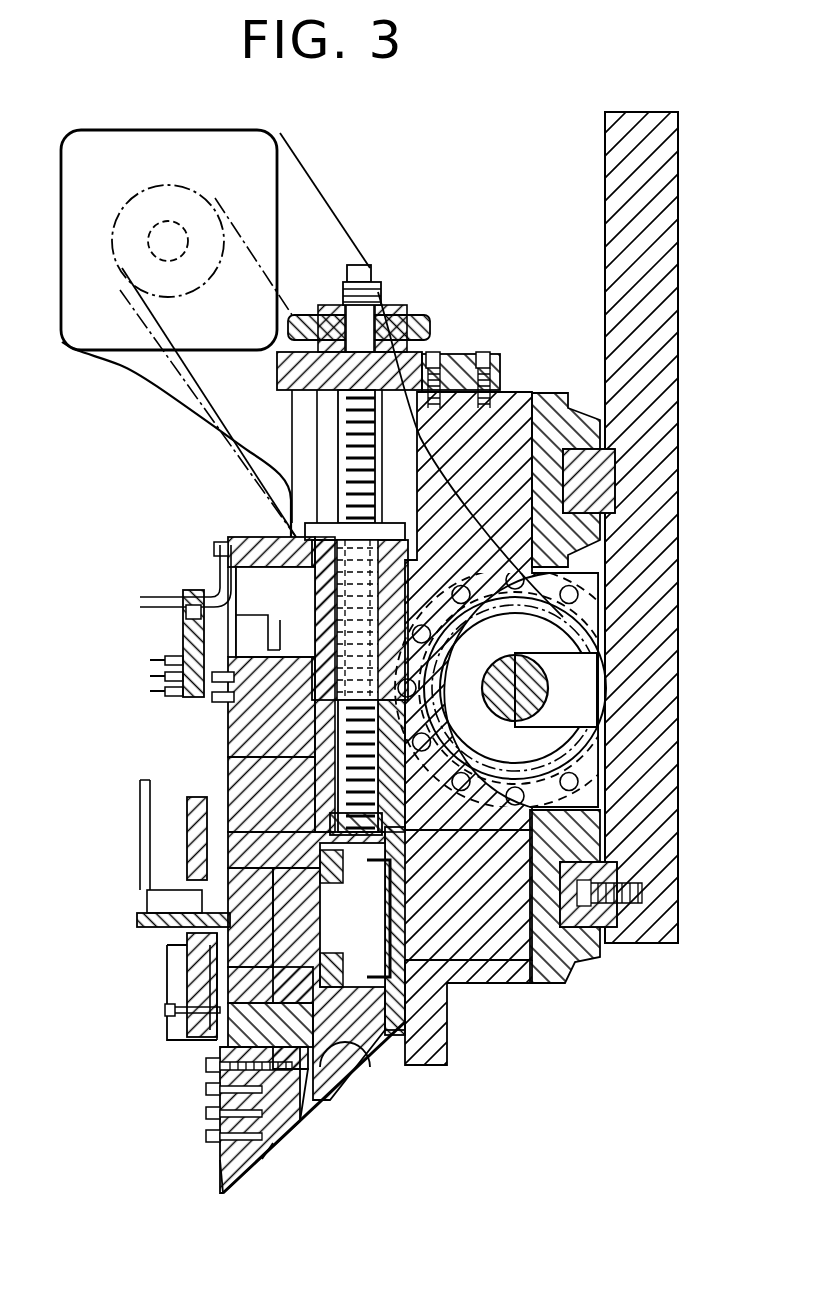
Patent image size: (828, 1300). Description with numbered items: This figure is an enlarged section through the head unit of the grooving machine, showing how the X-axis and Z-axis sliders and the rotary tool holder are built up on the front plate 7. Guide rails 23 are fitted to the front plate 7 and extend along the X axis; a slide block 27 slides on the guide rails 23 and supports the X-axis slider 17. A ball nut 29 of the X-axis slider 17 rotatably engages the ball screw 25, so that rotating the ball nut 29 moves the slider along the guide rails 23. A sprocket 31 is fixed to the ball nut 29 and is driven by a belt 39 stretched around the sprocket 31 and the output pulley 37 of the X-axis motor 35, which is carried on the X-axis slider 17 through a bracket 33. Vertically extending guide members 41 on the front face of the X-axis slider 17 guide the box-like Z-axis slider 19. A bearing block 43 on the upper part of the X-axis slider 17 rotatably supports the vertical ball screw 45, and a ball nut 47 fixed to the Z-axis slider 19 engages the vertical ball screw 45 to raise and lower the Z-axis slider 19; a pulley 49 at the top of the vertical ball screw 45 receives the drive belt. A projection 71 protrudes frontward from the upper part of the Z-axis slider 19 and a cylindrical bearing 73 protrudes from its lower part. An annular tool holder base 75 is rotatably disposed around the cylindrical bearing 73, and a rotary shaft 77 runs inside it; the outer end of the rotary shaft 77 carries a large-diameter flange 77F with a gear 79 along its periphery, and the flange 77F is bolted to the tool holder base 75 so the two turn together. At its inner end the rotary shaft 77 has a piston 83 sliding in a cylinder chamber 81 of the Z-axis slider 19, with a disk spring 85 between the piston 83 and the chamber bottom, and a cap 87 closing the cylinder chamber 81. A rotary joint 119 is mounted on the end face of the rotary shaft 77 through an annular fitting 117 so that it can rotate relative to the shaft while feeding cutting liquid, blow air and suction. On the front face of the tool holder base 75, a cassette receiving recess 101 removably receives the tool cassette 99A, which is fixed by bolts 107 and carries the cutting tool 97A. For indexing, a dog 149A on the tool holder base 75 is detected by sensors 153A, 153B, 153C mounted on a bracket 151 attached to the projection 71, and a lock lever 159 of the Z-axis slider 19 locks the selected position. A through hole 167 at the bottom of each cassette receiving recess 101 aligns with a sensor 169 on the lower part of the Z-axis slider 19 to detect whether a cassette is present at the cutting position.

The front plate 7 is at (602, 171).
The X-axis slider 17 is at (499, 983).
The Z-axis slider 19 is at (382, 1064).
The guide rails 23 is at (610, 492).
The ball screw 25 is at (548, 688).
The slide block 27 is at (600, 417).
The ball nut 29 is at (529, 649).
The sprocket 31 is at (598, 620).
The bracket 33 is at (302, 167).
The X-axis motor 35 is at (122, 346).
The output pulley 37 is at (183, 188).
The belt 39 is at (210, 416).
The guide members 41 is at (413, 351).
The bearing block 43 is at (277, 376).
The vertical ball screw 45 is at (380, 418).
The ball nut 47 is at (428, 547).
The pulley 49 is at (409, 314).
The projection 71 is at (256, 536).
The cylindrical bearing 73 is at (271, 862).
The annular tool holder base 75 is at (283, 740).
The rotary shaft 77 is at (323, 933).
The flange 77F is at (184, 993).
The gear 79 is at (180, 1040).
The cylinder chamber 81 is at (306, 850).
The piston 83 is at (414, 950).
The disk spring 85 is at (306, 954).
The cap 87 is at (405, 849).
The cutting tool 97A is at (222, 1194).
The tool cassette 99A is at (262, 1159).
The cassette receiving recess 101 is at (287, 1146).
The bolts 107 is at (210, 1094).
The annular fitting 117 is at (165, 954).
The rotary joint 119 is at (140, 915).
The dog 149A is at (202, 562).
The bracket 151 is at (183, 620).
The sensor 153A is at (165, 658).
The sensor 153B is at (165, 690).
The sensor 153C is at (165, 674).
The lock lever 159 is at (268, 625).
The through hole 167 is at (302, 1126).
The sensor 169 is at (344, 1093).